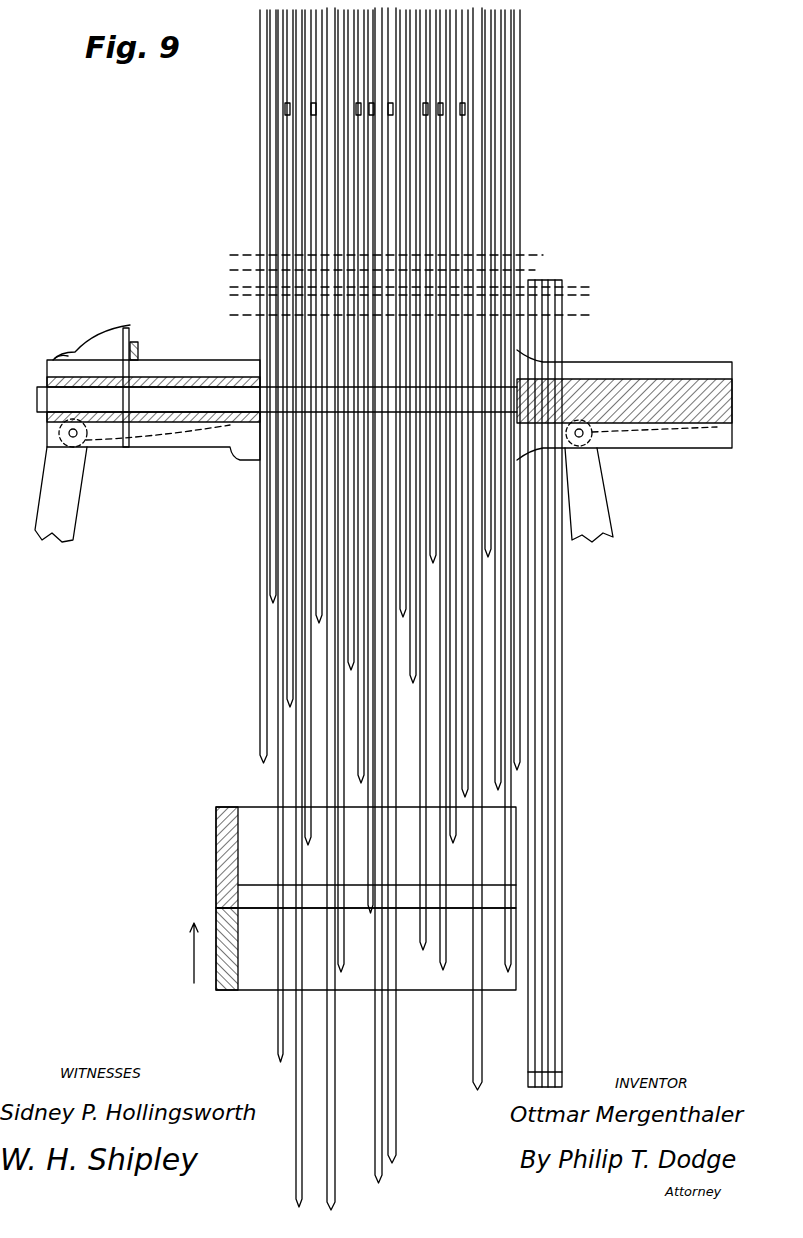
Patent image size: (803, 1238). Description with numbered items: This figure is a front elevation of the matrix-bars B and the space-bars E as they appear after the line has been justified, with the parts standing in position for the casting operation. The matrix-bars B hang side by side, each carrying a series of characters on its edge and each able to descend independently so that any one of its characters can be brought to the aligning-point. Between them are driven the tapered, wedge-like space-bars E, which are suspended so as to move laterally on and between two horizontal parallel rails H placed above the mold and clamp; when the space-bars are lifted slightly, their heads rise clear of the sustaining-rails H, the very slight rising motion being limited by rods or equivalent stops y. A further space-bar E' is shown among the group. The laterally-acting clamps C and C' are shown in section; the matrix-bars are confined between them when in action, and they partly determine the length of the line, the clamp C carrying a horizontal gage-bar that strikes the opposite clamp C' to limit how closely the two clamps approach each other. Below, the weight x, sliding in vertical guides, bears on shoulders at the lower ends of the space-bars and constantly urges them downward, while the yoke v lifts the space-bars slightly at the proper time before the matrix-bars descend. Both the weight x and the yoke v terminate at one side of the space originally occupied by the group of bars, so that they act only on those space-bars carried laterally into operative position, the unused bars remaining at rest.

The matrix-bar B is at (320, 62).
The space-bar E is at (407, 592).
The spacer E' is at (402, 117).
The stop rod y is at (394, 258).
The sustaining-rail H is at (410, 301).
The laterally-acting clamp C is at (147, 441).
The opposite clamp C' is at (624, 440).
The weight x is at (354, 857).
The yoke v is at (353, 949).